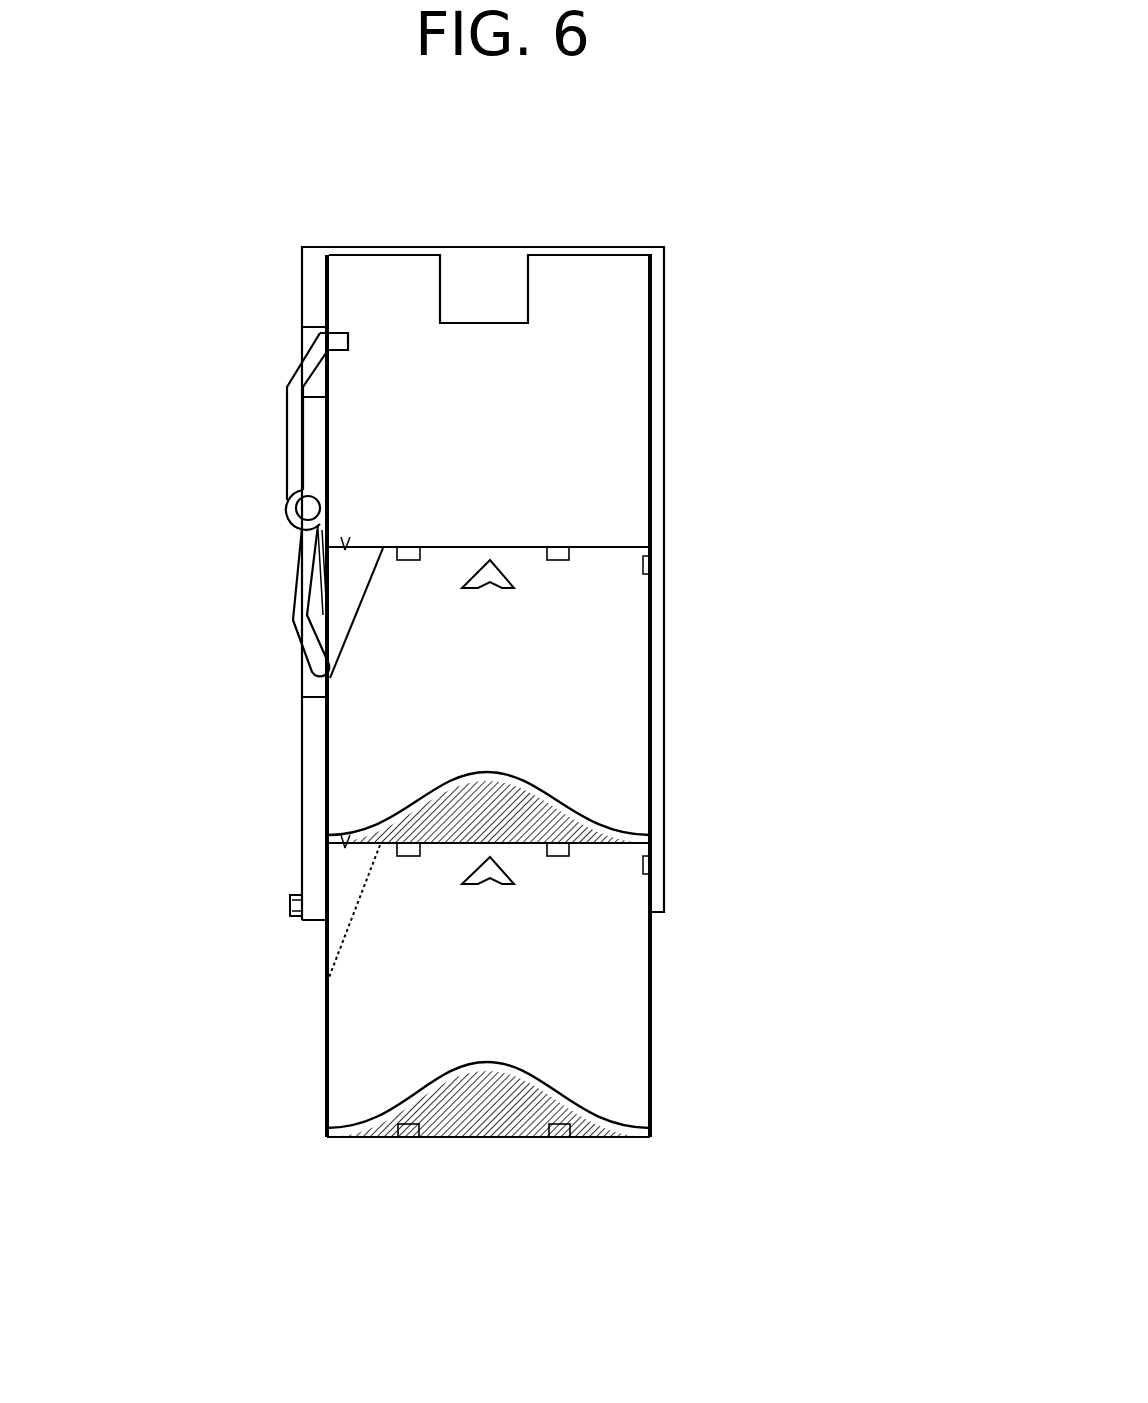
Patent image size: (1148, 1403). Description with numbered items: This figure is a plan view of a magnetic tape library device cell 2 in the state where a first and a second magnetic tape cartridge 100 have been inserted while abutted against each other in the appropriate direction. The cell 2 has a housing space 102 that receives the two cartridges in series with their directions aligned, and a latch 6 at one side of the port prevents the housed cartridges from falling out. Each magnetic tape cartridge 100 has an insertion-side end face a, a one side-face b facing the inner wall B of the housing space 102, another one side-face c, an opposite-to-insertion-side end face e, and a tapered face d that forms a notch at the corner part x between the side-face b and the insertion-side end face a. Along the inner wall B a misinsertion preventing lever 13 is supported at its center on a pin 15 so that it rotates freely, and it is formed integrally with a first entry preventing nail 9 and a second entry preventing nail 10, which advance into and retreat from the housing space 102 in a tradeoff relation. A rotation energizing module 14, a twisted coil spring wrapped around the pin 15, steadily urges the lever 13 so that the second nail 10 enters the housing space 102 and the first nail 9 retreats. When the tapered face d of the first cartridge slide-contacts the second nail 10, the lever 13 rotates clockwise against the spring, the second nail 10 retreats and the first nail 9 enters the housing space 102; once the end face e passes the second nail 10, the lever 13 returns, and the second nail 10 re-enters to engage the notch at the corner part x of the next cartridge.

The magnetic tape library device cell 2 is at (768, 528).
The latch 6 is at (290, 903).
The first entry preventing nail 9 is at (343, 333).
The second entry preventing nail 10 is at (310, 662).
The misinsertion preventing lever 13 is at (290, 438).
The rotation energizing module 14 is at (290, 530).
The pin 15 is at (300, 505).
The magnetic tape cartridge 100 is at (603, 720).
The housing space 102 is at (575, 337).
The insertion-side end face a is at (490, 546).
The one side-face b is at (318, 775).
The another one side-face c is at (550, 650).
The tapered face d is at (355, 608).
The opposite-to-insertion-side end face e is at (476, 1140).
The corner part x is at (345, 548).
The inner wall B is at (318, 745).